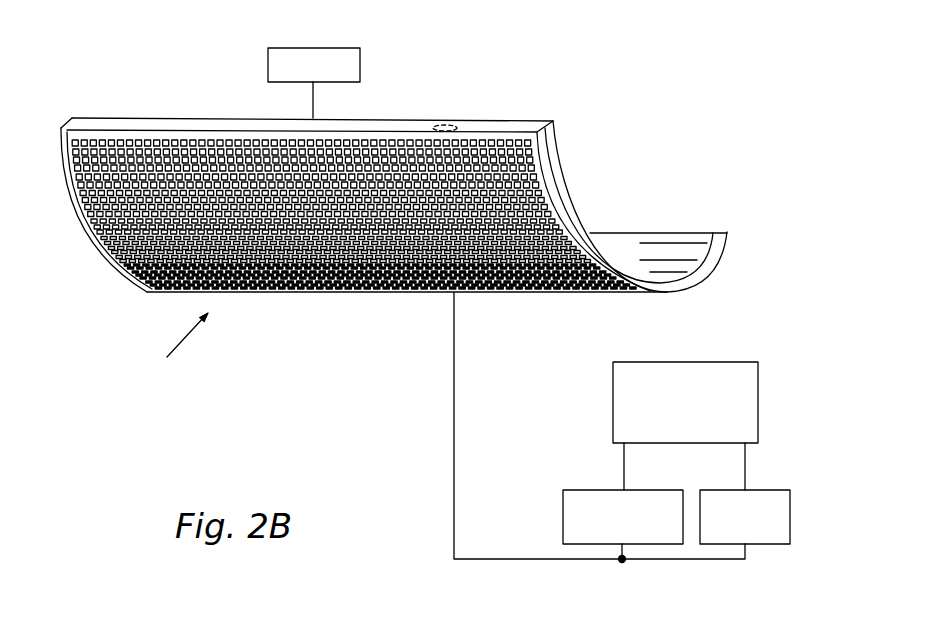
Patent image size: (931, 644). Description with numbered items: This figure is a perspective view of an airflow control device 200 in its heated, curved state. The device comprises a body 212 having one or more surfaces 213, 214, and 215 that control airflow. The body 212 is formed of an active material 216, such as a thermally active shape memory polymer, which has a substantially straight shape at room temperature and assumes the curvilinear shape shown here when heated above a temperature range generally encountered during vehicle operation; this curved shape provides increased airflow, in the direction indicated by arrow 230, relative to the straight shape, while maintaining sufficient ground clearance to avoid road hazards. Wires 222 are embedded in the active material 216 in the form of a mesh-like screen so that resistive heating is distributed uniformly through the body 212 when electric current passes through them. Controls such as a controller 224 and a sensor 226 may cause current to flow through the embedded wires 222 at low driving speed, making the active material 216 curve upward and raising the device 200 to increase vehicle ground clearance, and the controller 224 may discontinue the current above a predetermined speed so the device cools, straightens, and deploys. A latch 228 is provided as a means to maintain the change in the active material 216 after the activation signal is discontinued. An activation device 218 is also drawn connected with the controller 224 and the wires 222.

The airflow control device 200 is at (434, 187).
The body 212 is at (713, 270).
The surface 213 is at (135, 118).
The surface 214 is at (565, 293).
The surface 215 is at (445, 126).
The active material 216 is at (725, 232).
The activation device 218 is at (598, 490).
The wires 222 is at (248, 293).
The controller 224 is at (680, 361).
The sensor 226 is at (728, 490).
The latch 228 is at (308, 48).
The arrow 230 is at (190, 336).